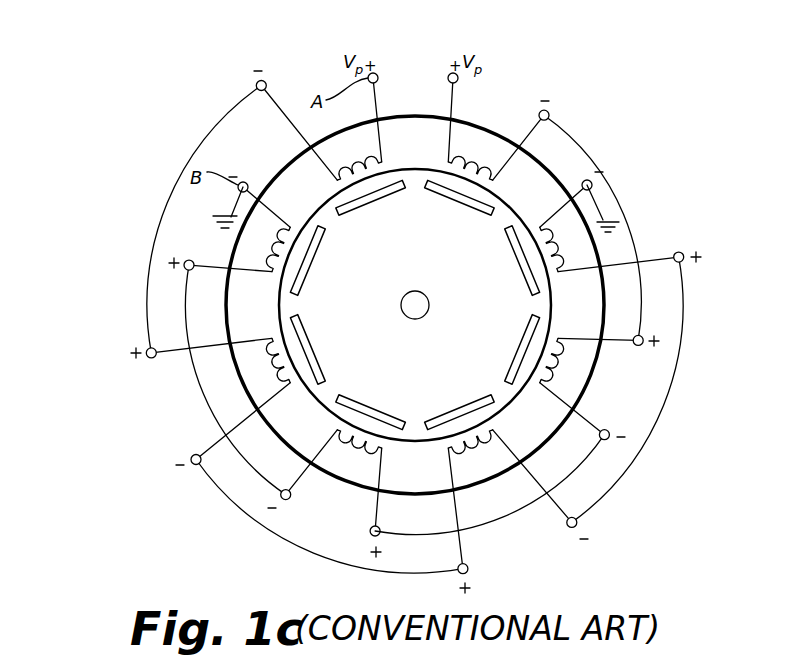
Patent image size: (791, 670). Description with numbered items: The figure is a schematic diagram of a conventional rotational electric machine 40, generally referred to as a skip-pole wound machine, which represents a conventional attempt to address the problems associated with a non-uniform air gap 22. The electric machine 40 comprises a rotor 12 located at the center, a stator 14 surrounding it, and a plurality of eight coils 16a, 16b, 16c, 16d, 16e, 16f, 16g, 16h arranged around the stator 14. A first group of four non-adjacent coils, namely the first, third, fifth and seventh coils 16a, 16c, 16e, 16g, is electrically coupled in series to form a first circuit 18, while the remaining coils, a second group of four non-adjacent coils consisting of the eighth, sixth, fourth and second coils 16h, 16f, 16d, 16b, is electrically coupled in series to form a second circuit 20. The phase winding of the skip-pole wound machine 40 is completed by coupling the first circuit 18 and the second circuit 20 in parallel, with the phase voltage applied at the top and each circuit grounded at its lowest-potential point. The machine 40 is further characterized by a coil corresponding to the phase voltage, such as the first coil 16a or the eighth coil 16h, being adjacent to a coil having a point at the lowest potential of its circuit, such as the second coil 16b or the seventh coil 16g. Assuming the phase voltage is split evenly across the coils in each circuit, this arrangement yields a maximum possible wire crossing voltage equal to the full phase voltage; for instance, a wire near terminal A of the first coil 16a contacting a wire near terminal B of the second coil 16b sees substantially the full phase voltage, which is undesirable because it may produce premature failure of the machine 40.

The rotor 12 is at (368, 355).
The stator 14 is at (413, 116).
The coil 16a is at (385, 163).
The coil 16b is at (292, 228).
The coil 16c is at (271, 336).
The coil 16d is at (336, 429).
The coil 16e is at (444, 449).
The coil 16f is at (537, 386).
The coil 16g is at (559, 274).
The coil 16h is at (496, 181).
The first circuit 18 is at (150, 257).
The second circuit 20 is at (612, 186).
The non-uniform air gap 22 is at (416, 440).
The electric machine 40 is at (463, 254).